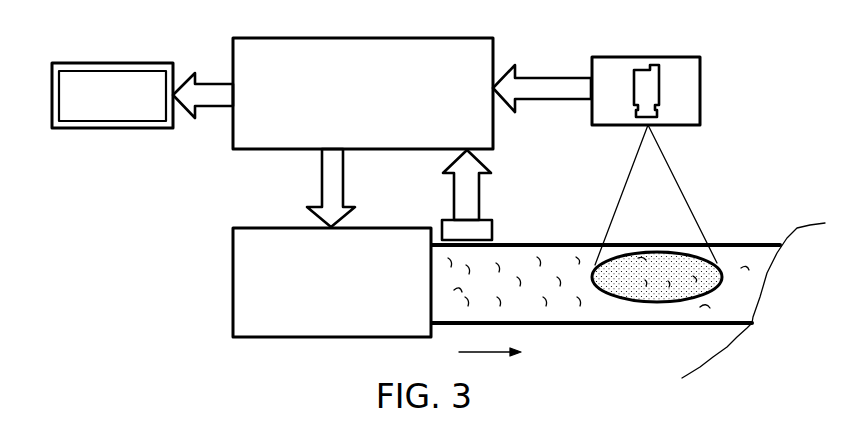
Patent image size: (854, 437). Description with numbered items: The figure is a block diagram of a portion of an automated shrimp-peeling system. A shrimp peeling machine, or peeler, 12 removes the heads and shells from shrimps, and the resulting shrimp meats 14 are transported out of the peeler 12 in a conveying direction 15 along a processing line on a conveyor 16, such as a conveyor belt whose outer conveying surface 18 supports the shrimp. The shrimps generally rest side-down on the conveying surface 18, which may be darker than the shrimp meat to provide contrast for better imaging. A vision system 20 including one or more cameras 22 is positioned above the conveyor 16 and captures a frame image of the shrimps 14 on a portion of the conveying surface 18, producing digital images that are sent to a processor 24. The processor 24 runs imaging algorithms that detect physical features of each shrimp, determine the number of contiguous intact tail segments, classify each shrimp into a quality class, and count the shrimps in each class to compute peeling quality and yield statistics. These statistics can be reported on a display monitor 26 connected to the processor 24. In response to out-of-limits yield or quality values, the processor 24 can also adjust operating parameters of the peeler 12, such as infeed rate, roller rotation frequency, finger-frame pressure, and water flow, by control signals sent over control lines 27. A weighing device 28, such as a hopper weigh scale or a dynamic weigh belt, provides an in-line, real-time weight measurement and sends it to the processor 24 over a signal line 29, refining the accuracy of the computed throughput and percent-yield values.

The shrimp peeling machine 12 is at (318, 290).
The shrimp meats 14 is at (546, 296).
The conveying direction 15 is at (482, 353).
The conveyor 16 is at (578, 323).
The conveying surface 18 is at (615, 317).
The vision system 20 is at (660, 57).
The camera 22 is at (660, 95).
The processor 24 is at (352, 103).
The display monitor 26 is at (98, 106).
The control lines 27 is at (320, 181).
The weighing device 28 is at (492, 232).
The signal line 29 is at (480, 190).